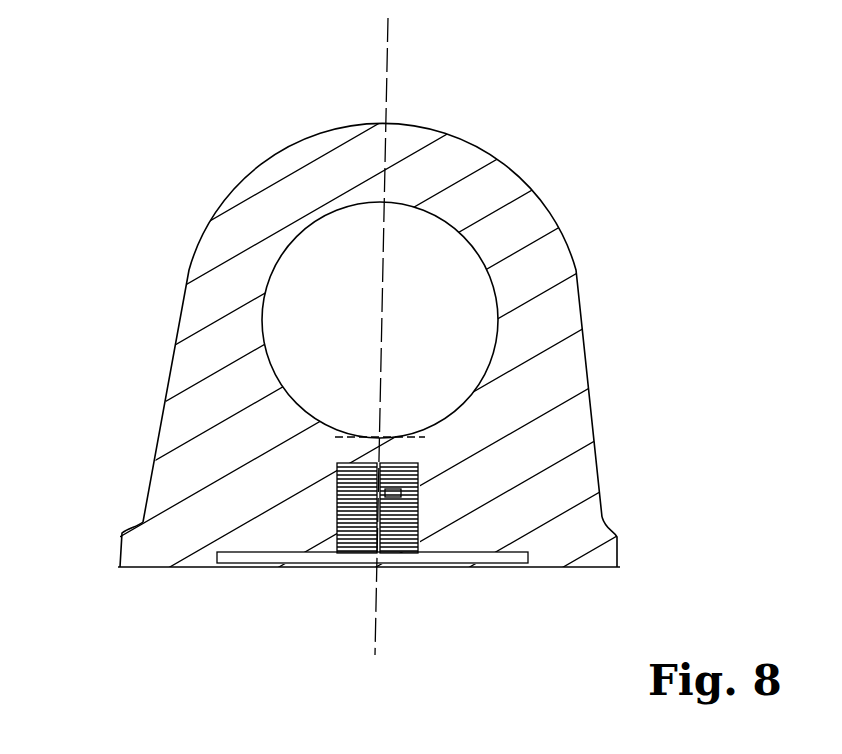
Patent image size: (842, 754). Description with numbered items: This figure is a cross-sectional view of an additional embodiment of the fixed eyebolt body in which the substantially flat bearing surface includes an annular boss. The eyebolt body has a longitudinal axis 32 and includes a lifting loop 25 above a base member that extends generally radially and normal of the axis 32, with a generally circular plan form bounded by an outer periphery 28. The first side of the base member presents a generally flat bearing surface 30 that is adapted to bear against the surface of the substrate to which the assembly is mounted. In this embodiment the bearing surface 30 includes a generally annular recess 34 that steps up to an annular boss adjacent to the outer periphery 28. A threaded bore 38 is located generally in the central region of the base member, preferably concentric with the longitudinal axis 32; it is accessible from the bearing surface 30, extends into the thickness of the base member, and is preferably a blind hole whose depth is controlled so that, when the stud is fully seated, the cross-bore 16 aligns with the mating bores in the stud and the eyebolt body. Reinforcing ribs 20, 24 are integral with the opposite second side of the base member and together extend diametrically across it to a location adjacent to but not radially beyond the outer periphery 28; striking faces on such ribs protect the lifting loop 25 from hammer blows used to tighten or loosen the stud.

The cross-bore 16 is at (338, 463).
The reinforcing rib 20 is at (540, 495).
The reinforcing rib 24 is at (250, 487).
The lifting loop 25 is at (452, 152).
The outer periphery 28 is at (120, 551).
The bearing surface 30 is at (588, 567).
The longitudinal axis 32 is at (373, 628).
The annular recess 34 is at (504, 567).
The threaded bore 38 is at (355, 557).